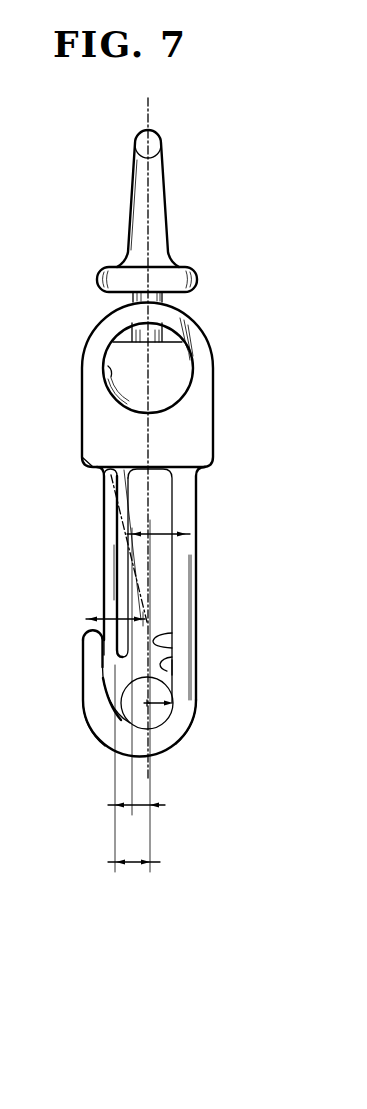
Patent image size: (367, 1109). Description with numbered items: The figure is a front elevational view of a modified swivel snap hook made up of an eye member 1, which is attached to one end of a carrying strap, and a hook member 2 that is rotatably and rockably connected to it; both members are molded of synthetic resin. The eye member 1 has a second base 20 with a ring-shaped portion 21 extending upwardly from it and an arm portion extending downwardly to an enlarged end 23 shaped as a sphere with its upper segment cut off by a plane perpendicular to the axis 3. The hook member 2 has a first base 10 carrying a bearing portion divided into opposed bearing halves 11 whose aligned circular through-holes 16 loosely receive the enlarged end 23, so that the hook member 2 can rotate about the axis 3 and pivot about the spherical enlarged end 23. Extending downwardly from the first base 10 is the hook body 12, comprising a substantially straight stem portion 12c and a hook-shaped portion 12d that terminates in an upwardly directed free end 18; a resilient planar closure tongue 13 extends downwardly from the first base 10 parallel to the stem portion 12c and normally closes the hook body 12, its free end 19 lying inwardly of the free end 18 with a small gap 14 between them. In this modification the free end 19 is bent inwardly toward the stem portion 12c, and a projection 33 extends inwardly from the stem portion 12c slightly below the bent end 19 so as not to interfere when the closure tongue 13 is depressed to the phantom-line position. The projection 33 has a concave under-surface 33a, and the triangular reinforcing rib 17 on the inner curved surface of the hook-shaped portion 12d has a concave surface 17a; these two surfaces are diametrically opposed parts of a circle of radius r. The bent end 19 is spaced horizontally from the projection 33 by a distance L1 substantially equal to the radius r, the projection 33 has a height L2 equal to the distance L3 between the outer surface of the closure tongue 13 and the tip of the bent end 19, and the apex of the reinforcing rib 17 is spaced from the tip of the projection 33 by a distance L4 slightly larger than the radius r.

The eye member 1 is at (167, 205).
The hook member 2 is at (162, 601).
The axis 3 is at (150, 120).
The first base 10 is at (93, 445).
The bearing halves 11 is at (100, 323).
The hook body 12 is at (182, 586).
The stem portion 12c is at (180, 670).
The hook-shaped portion 12d is at (178, 728).
The closure tongue 13 is at (110, 525).
The gap 14 is at (104, 633).
The through-holes 16 is at (110, 372).
The reinforcing rib 17 is at (110, 628).
The concave surface 17a is at (107, 727).
The free end 18 is at (86, 641).
The free end 19 is at (116, 652).
The second base 20 is at (177, 282).
The ring-shaped portion 21 is at (135, 167).
The enlarged end 23 is at (175, 377).
The projection 33 is at (168, 655).
The concave under-surface 33a is at (162, 673).
The distance L1 is at (137, 807).
The height L2 is at (170, 534).
The distance L3 is at (118, 615).
The distance L4 is at (132, 863).
The radius r is at (151, 732).